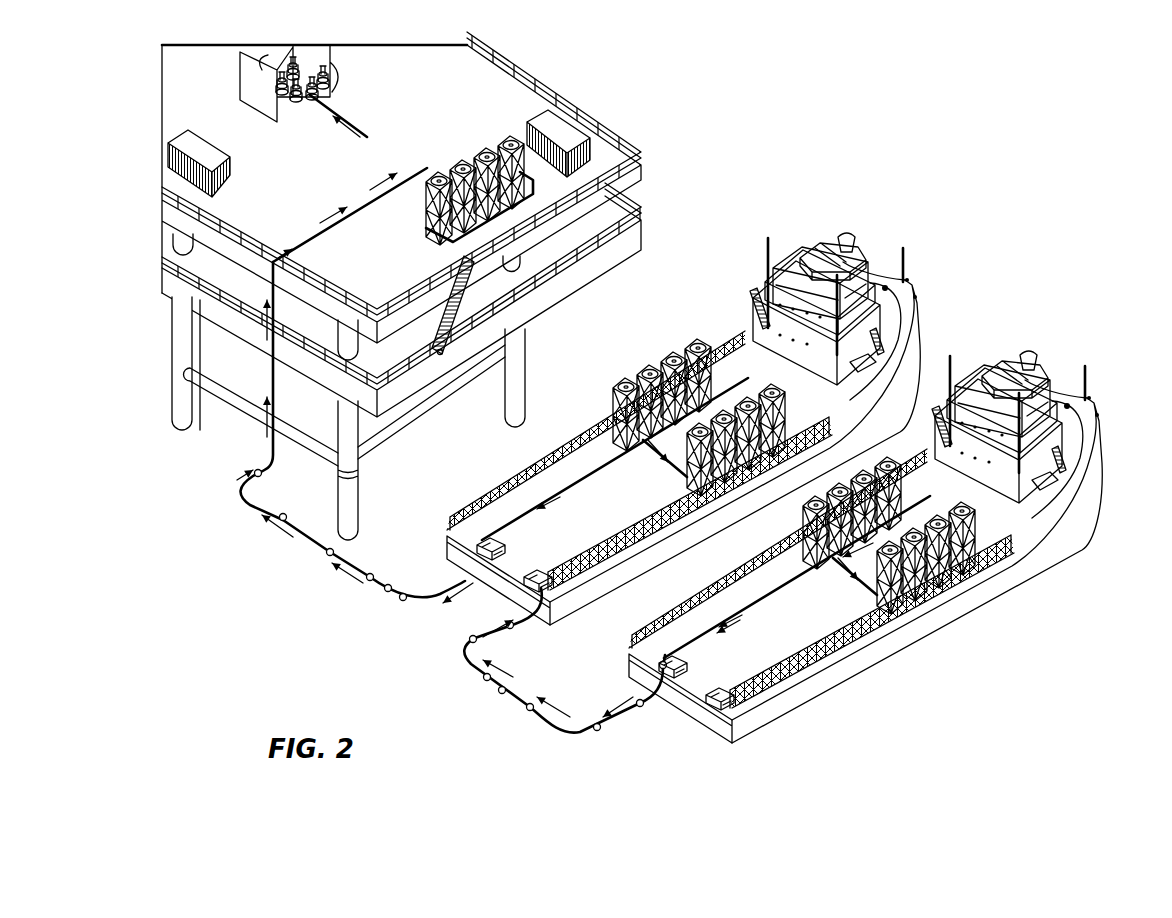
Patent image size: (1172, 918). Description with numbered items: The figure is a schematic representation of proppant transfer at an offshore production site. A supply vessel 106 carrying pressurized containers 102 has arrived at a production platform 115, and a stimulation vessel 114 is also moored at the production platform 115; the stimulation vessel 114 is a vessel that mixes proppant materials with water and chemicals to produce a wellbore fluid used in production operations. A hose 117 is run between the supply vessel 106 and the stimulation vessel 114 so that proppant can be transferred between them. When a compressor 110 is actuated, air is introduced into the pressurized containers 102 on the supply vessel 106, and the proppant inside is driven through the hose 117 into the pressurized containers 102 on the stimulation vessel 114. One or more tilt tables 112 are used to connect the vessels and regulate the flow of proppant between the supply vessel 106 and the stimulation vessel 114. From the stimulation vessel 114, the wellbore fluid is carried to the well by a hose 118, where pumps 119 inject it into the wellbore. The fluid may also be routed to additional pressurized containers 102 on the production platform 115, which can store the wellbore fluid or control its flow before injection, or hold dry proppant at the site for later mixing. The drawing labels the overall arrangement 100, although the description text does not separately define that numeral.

The offshore platform 100 is at (415, 247).
The pressurized containers 102 is at (480, 140).
The supply vessel 106 is at (950, 417).
The compressor 110 is at (745, 323).
The tilt tables 112 is at (463, 585).
The stimulation vessel 114 is at (787, 303).
The production platform 115 is at (425, 362).
The hose 117 is at (503, 688).
The hose 118 is at (320, 548).
The pumps 119 is at (310, 93).